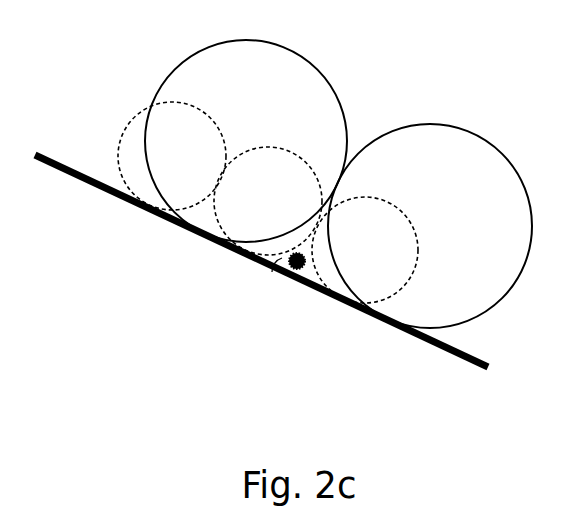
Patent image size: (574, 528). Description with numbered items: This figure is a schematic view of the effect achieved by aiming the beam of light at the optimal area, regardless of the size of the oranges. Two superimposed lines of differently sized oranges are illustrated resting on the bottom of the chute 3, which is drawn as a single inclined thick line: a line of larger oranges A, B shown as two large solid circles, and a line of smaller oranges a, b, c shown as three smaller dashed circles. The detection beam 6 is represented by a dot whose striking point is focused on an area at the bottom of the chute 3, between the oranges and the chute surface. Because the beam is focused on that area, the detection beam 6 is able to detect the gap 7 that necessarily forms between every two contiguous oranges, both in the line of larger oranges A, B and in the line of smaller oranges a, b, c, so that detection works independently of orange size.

The chute 3 is at (455, 353).
The detection beam 6 is at (297, 270).
The gap 7 is at (280, 261).
The larger orange A is at (441, 218).
The larger orange B is at (255, 108).
The smaller orange a is at (356, 260).
The smaller orange b is at (257, 210).
The smaller orange c is at (162, 166).